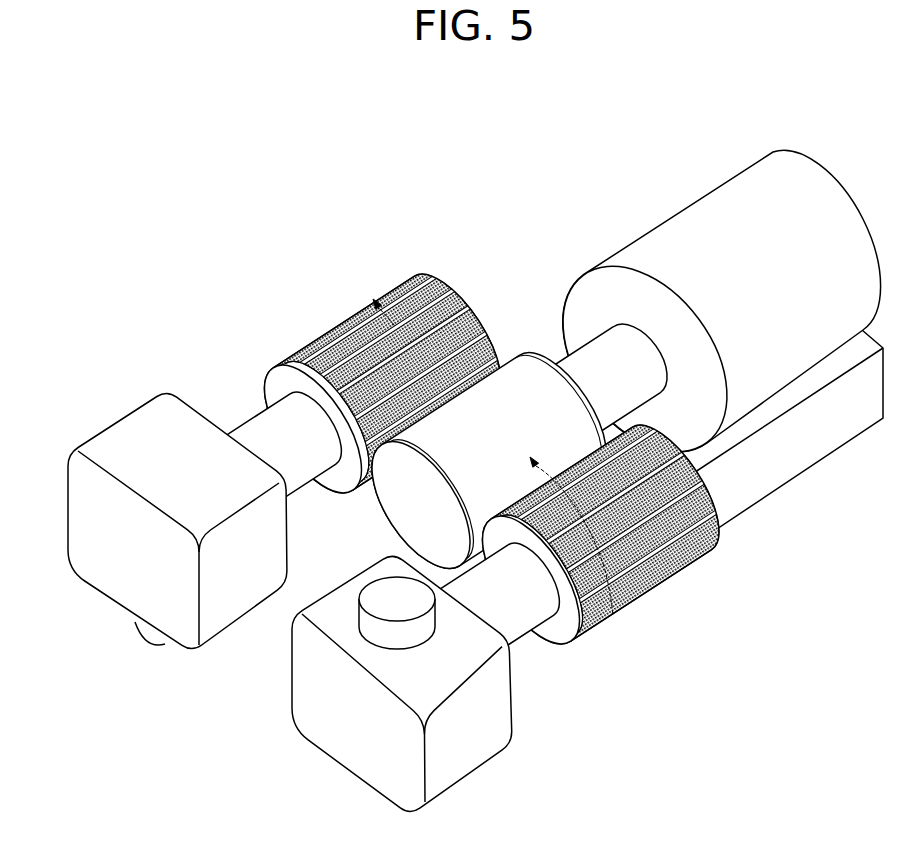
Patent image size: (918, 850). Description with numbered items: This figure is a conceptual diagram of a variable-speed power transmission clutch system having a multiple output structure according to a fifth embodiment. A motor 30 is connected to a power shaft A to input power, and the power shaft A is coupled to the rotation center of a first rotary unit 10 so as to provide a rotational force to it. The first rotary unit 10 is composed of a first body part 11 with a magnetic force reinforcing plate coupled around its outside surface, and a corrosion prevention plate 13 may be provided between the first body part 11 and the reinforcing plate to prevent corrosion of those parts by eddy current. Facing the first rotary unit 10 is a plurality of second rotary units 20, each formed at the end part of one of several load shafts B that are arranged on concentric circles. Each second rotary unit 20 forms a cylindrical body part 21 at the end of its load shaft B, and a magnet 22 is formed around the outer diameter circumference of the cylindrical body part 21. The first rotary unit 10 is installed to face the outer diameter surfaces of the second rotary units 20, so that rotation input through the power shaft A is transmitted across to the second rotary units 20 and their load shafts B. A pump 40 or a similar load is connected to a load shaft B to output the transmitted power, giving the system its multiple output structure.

The first rotary unit 10 is at (612, 616).
The first body part 11 is at (437, 528).
The corrosion prevention plate 13 is at (522, 383).
The second rotary unit 20 is at (382, 368).
The cylindrical body part 21 is at (303, 347).
The magnet 22 is at (407, 282).
The motor 30 is at (733, 232).
The pump 40 is at (148, 437).
The power shaft A is at (608, 372).
The load shaft B is at (262, 435).